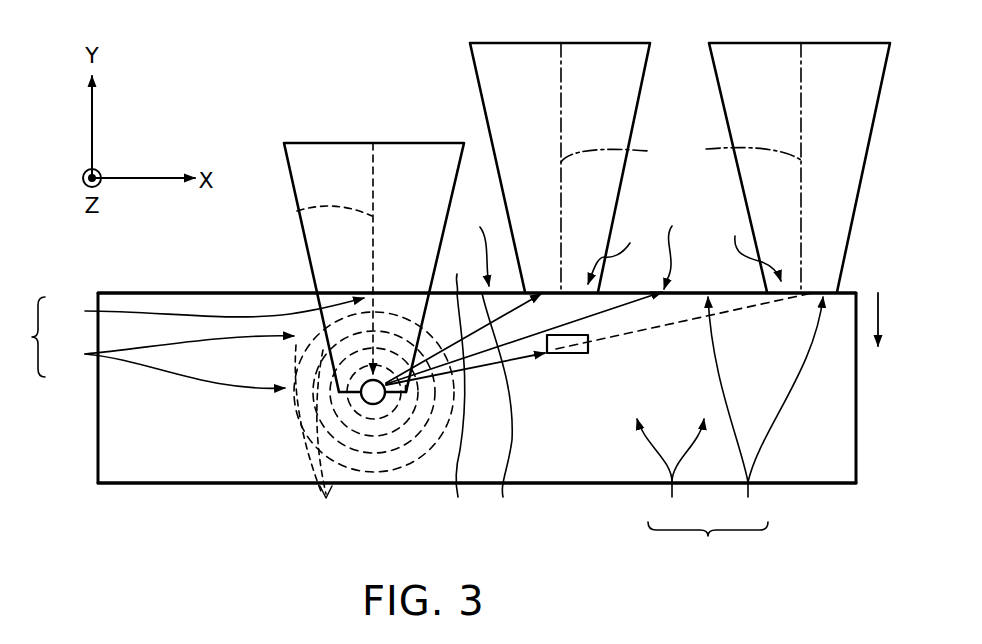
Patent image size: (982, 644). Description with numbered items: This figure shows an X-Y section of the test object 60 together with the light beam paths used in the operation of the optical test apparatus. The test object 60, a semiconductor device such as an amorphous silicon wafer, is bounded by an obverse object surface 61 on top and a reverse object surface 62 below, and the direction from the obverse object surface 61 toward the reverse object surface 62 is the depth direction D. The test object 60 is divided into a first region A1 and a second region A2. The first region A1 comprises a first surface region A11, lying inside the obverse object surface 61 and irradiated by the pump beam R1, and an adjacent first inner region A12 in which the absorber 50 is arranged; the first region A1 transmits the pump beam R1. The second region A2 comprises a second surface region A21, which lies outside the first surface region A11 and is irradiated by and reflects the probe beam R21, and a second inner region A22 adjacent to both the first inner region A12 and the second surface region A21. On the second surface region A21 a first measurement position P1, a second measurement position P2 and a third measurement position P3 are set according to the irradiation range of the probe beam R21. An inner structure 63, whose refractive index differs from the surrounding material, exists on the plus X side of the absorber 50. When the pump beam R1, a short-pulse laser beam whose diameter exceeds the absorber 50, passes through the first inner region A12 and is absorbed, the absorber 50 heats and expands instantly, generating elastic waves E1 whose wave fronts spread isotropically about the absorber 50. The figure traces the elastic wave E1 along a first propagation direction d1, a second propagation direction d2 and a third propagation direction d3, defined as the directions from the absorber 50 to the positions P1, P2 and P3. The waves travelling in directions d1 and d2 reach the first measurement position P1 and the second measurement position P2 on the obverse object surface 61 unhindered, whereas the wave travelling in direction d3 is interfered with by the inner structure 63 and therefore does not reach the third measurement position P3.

The test object 60 is at (98, 447).
The obverse object surface 61 is at (145, 292).
The reverse object surface 62 is at (148, 484).
The absorber 50 is at (373, 404).
The inner structure 63 is at (567, 353).
The first region A1 is at (24, 337).
The first surface region A11 is at (206, 311).
The first inner region A12 is at (171, 362).
The second region A2 is at (708, 543).
The second surface region A21 is at (638, 349).
The second inner region A22 is at (670, 472).
The pump beam R1 is at (304, 233).
The probe beam R21 is at (735, 166).
The first measurement position P1 is at (616, 252).
The second measurement position P2 is at (676, 244).
The third measurement position P3 is at (750, 245).
The first propagation direction d1 is at (455, 270).
The second propagation direction d2 is at (458, 409).
The third propagation direction d3 is at (499, 409).
The elastic wave E1 is at (318, 443).
The depth direction D is at (887, 319).